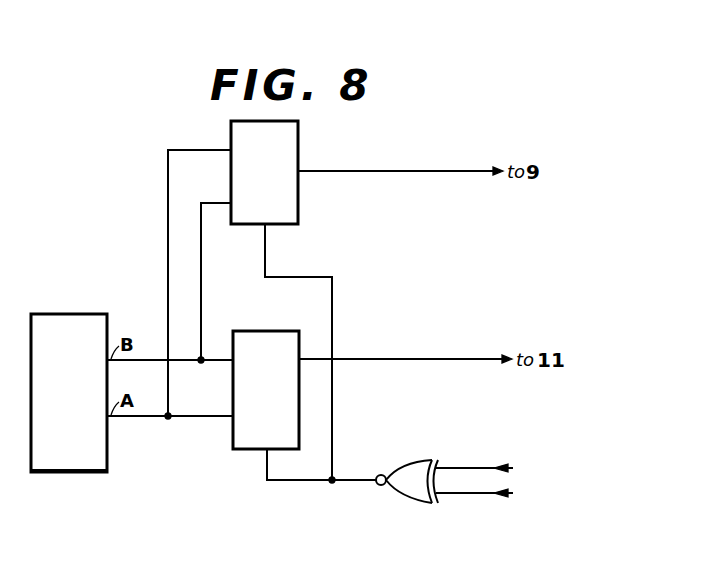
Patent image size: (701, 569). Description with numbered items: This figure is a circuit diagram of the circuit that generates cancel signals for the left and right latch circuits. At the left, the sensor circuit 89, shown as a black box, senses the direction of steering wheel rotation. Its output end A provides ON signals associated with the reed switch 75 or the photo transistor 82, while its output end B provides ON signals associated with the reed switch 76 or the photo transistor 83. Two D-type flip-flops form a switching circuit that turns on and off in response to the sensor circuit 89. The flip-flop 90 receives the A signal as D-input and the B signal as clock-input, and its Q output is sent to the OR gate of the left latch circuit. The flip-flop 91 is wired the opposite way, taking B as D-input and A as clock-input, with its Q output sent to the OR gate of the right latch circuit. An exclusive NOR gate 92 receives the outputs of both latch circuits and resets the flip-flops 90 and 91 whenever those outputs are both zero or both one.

The sensor circuit 89 is at (67, 314).
The D-type flip-flop 90 is at (298, 152).
The D-type flip-flop 91 is at (250, 331).
The exclusive NOR gate 92 is at (416, 462).
The reed switch 76 is at (88, 358).
The photo transistor 83 is at (86, 379).
The reed switch 75 is at (88, 417).
The photo transistor 82 is at (86, 440).